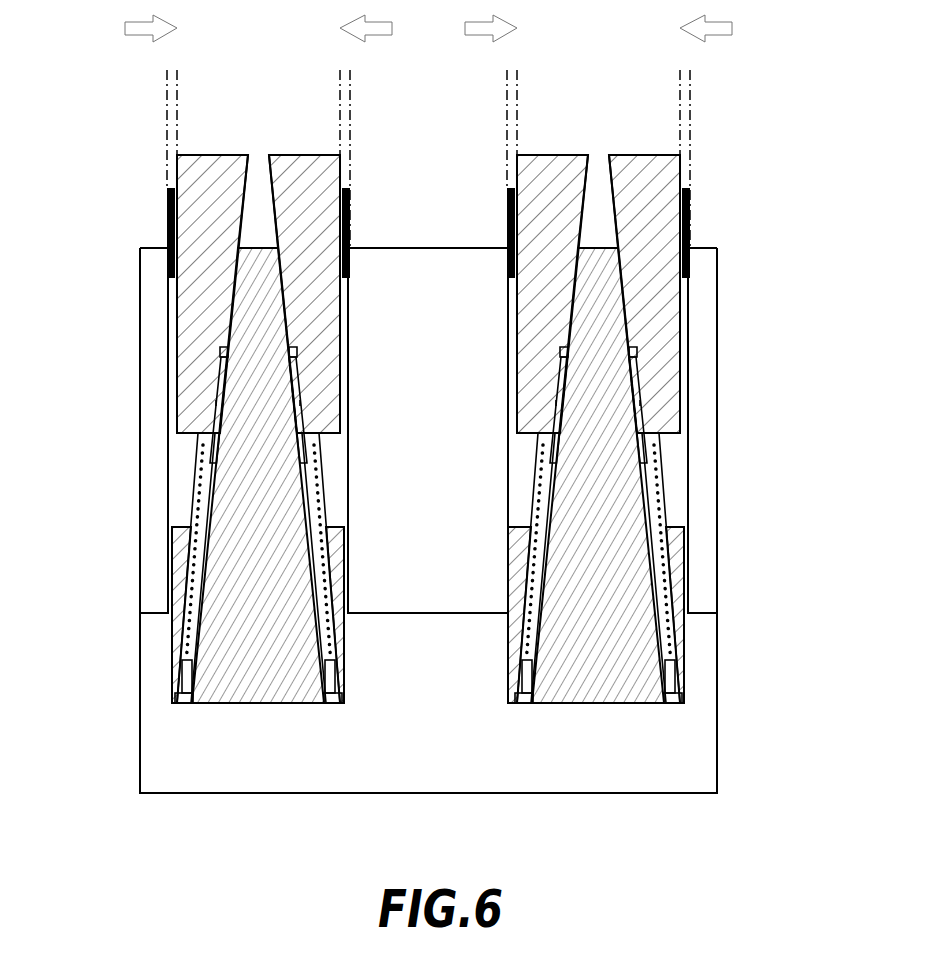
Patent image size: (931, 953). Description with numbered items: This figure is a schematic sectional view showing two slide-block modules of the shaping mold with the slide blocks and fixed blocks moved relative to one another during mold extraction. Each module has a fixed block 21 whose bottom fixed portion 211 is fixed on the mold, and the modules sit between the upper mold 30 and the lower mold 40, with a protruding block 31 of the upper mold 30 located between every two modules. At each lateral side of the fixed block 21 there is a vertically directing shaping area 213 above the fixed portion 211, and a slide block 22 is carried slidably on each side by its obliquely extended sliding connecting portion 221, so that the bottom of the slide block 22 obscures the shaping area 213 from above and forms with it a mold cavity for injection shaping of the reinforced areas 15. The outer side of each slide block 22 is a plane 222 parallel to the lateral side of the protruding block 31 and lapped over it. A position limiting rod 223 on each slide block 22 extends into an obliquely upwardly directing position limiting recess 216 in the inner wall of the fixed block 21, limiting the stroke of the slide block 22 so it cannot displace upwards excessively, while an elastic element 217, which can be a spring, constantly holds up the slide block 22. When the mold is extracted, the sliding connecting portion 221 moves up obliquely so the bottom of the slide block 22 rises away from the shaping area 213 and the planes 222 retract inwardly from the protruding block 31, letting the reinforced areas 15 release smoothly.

The reinforced area 15 is at (165, 226).
The fixed block 21 is at (262, 705).
The slide block 22 is at (212, 165).
The upper mold 30 is at (420, 413).
The protruding block 31 is at (140, 288).
The lower mold 40 is at (120, 778).
The fixed portion 211 is at (205, 705).
The shaping area 213 is at (172, 575).
The position limiting recess 216 is at (232, 398).
The elastic element 217 is at (195, 475).
The sliding connecting portion 221 is at (262, 168).
The plane 222 is at (168, 182).
The position limiting rod 223 is at (292, 366).